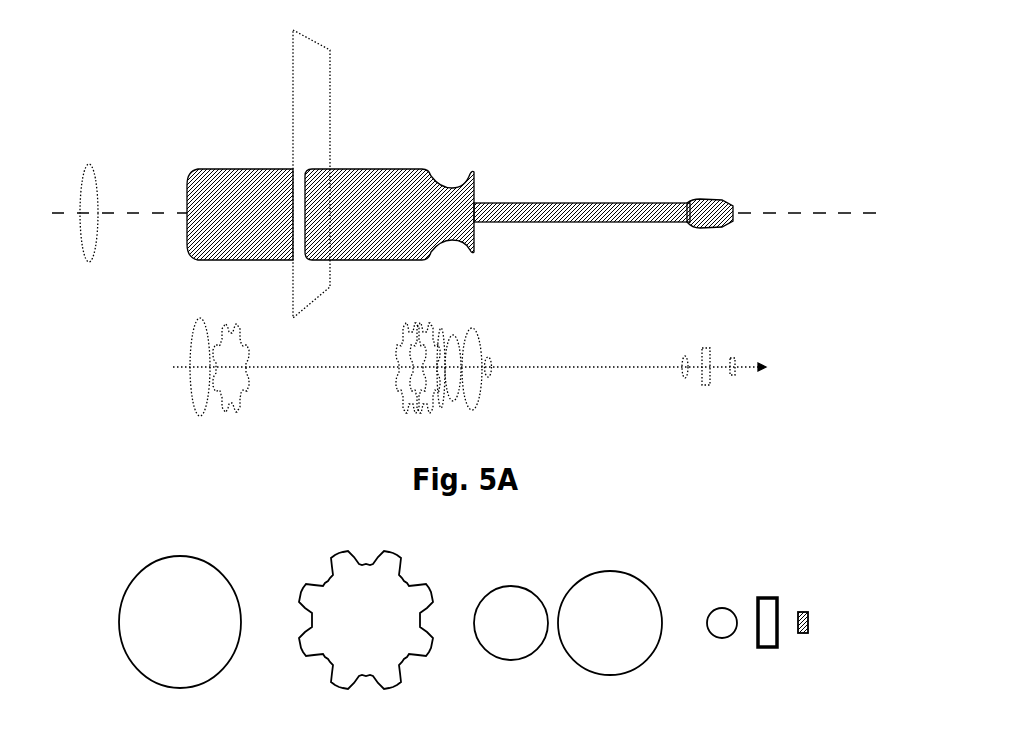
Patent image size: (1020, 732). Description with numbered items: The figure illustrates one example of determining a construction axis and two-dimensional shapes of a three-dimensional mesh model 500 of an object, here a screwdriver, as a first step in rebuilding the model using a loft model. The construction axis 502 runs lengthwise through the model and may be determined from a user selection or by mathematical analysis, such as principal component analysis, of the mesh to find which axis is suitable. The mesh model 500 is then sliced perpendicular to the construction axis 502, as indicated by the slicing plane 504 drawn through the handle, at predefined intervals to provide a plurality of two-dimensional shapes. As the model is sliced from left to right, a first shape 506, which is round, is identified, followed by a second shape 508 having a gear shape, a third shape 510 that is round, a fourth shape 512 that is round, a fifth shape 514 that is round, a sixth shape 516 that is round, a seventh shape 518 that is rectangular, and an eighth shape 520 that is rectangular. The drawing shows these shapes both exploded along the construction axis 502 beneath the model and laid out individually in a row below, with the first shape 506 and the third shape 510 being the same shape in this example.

The 3D mesh model 500 is at (460, 210).
The construction axis 502 is at (465, 275).
The slice 504 is at (337, 160).
The first 2D shape 506 is at (160, 381).
The second 2D shape 508 is at (326, 393).
The third 2D shape 510 is at (443, 242).
The fourth 2D shape 512 is at (496, 379).
The fifth shape 514 is at (562, 376).
The sixth shape 516 is at (611, 370).
The seventh shape 518 is at (736, 365).
The eighth shape 520 is at (769, 365).